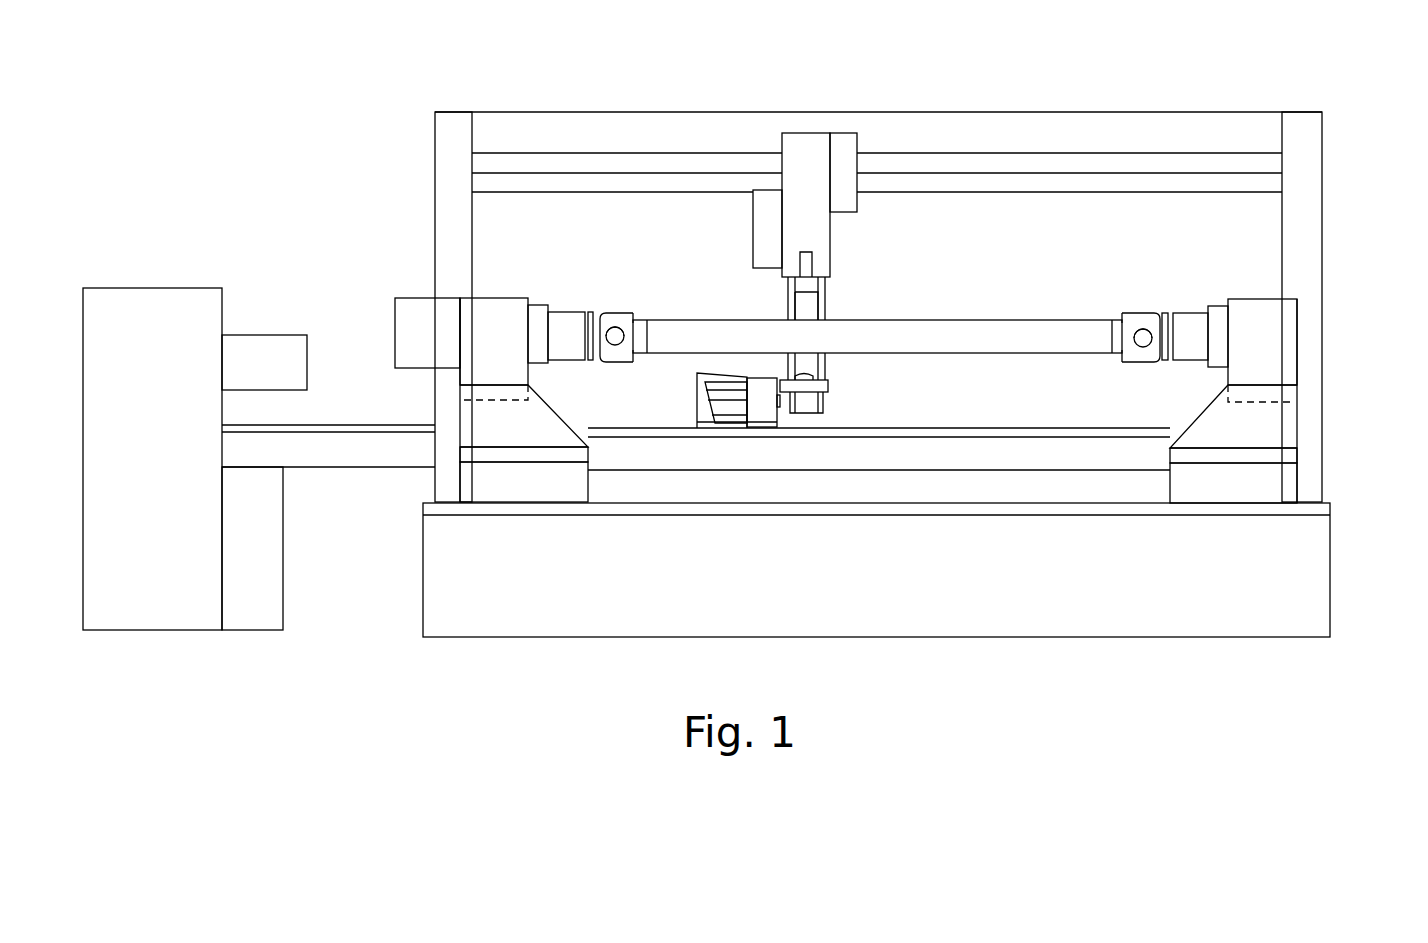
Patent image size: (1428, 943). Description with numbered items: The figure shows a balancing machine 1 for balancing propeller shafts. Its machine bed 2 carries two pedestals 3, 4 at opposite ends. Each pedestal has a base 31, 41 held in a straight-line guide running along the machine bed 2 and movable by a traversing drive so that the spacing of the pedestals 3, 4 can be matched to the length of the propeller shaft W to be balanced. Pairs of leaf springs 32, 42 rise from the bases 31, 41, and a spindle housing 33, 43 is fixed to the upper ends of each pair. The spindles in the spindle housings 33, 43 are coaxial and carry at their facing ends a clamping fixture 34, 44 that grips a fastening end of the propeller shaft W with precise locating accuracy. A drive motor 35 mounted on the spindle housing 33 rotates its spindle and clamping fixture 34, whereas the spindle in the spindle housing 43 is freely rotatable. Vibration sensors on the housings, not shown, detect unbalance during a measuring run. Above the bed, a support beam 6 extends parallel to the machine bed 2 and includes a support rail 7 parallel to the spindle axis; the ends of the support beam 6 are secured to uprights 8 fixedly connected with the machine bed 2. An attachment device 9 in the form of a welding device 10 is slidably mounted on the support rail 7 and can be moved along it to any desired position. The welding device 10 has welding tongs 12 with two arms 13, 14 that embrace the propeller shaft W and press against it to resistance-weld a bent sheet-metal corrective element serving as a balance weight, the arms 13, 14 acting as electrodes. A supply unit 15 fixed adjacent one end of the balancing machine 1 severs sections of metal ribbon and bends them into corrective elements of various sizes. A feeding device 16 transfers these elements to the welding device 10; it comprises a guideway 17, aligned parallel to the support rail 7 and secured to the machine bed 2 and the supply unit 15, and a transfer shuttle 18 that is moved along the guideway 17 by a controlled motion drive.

The balancing machine 1 is at (565, 98).
The machine bed 2 is at (1113, 618).
The pedestal 3 is at (440, 468).
The pedestal 4 is at (1310, 427).
The support beam 6 is at (955, 125).
The support rail 7 is at (1065, 160).
The uprights 8 is at (453, 203).
The attachment device 9 is at (800, 128).
The welding device 10 is at (832, 245).
The welding tongs 12 is at (787, 307).
The arm 13 is at (813, 288).
The arm 14 is at (823, 398).
The supply unit 15 is at (104, 282).
The feeding device 16 is at (327, 478).
The guideway 17 is at (963, 438).
The transfer shuttle 18 is at (697, 413).
The base 31 is at (495, 485).
The leaf springs 32 is at (470, 422).
The spindle housing 33 is at (493, 310).
The clamping fixture 34 is at (568, 320).
The drive motor 35 is at (405, 322).
The base 41 is at (1282, 473).
The leaf springs 42 is at (1282, 438).
The spindle housing 43 is at (1282, 338).
The clamping fixture 44 is at (1188, 320).
The propeller shaft W is at (982, 337).